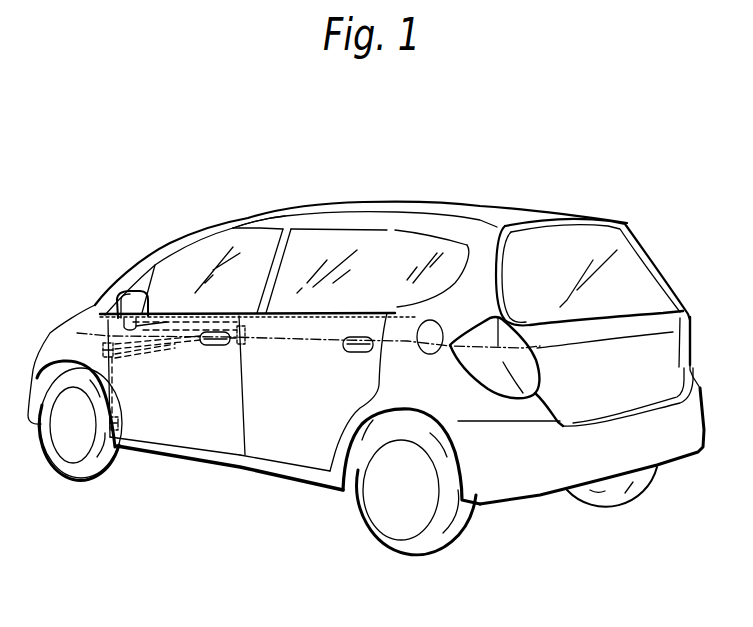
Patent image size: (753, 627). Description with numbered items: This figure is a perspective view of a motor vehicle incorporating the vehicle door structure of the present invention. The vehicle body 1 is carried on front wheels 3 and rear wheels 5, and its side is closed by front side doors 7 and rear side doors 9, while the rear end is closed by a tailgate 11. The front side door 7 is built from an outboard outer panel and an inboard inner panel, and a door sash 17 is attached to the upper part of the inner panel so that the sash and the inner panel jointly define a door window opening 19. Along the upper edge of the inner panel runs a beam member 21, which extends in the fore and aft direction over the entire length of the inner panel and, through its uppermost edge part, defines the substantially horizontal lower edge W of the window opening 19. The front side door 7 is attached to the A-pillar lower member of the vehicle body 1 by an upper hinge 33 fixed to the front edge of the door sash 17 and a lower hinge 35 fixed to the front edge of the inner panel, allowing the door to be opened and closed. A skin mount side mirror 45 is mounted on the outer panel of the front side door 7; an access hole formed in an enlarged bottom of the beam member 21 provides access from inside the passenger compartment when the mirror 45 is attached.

The vehicle body 1 is at (433, 377).
The front wheels 3 is at (100, 480).
The rear wheels 5 is at (470, 514).
The front side door 7 is at (203, 440).
The rear side doors 9 is at (283, 448).
The tailgate 11 is at (677, 343).
The door sash 17 is at (247, 222).
The door window opening 19 is at (277, 222).
The beam member 21 is at (165, 318).
The upper hinge 33 is at (100, 348).
The lower hinge 35 is at (118, 428).
The skin mount side mirror 45 is at (122, 303).
The lower edge of the window opening W is at (294, 318).